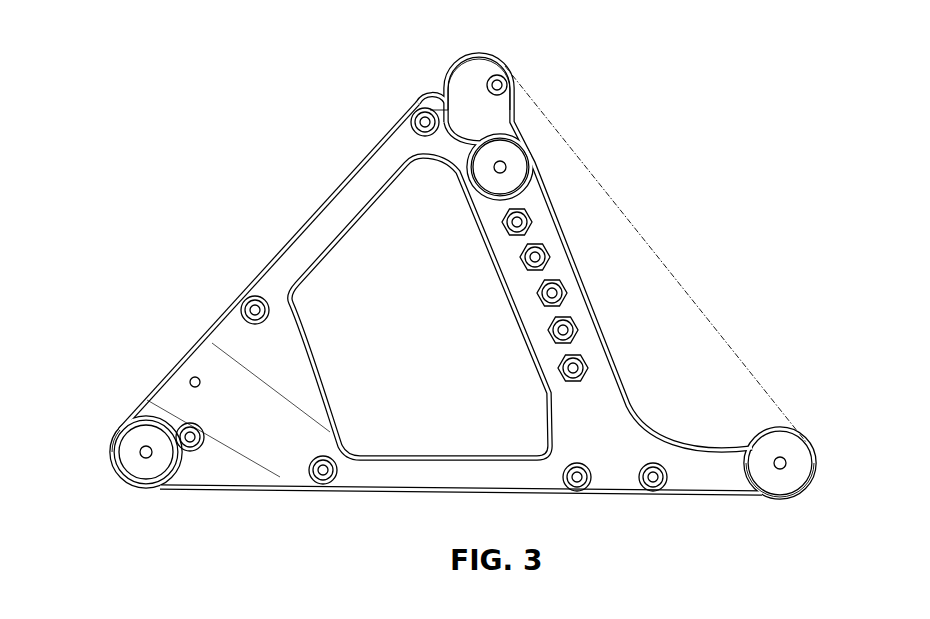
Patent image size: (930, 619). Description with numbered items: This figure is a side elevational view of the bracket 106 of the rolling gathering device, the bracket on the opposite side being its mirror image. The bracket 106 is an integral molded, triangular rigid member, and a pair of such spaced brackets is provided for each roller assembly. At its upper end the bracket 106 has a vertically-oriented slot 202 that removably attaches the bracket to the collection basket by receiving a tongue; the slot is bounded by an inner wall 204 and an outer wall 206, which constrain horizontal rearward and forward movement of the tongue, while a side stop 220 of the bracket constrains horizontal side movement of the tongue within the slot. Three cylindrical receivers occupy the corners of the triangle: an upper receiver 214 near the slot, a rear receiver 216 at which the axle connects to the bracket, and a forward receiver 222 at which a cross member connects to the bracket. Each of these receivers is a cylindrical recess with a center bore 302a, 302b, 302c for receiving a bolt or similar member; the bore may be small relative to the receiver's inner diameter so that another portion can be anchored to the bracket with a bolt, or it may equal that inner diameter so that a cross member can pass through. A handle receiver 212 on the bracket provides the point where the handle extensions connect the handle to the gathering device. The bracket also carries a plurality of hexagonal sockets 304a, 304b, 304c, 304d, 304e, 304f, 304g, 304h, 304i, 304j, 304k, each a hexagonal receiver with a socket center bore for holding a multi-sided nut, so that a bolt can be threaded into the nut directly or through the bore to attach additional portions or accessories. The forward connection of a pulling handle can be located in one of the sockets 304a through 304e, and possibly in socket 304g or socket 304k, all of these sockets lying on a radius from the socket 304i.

The bracket 106 is at (311, 63).
The slot 202 is at (462, 107).
The inner wall 204 is at (443, 117).
The outer wall 206 is at (495, 95).
The handle receiver 212 is at (217, 382).
The upper receiver 214 is at (518, 142).
The rear receiver 216 is at (123, 430).
The side stop 220 is at (744, 383).
The forward receiver 222 is at (793, 498).
The center bore 302a is at (504, 165).
The center bore 302b is at (781, 462).
The center bore 302c is at (146, 452).
The socket 304a is at (528, 220).
The socket 304b is at (547, 250).
The socket 304c is at (563, 290).
The socket 304d is at (577, 328).
The socket 304e is at (586, 367).
The socket 304f is at (659, 490).
The socket 304g is at (576, 488).
The socket 304h is at (332, 470).
The socket 304i is at (195, 443).
The socket 304j is at (253, 300).
The socket 304k is at (431, 112).